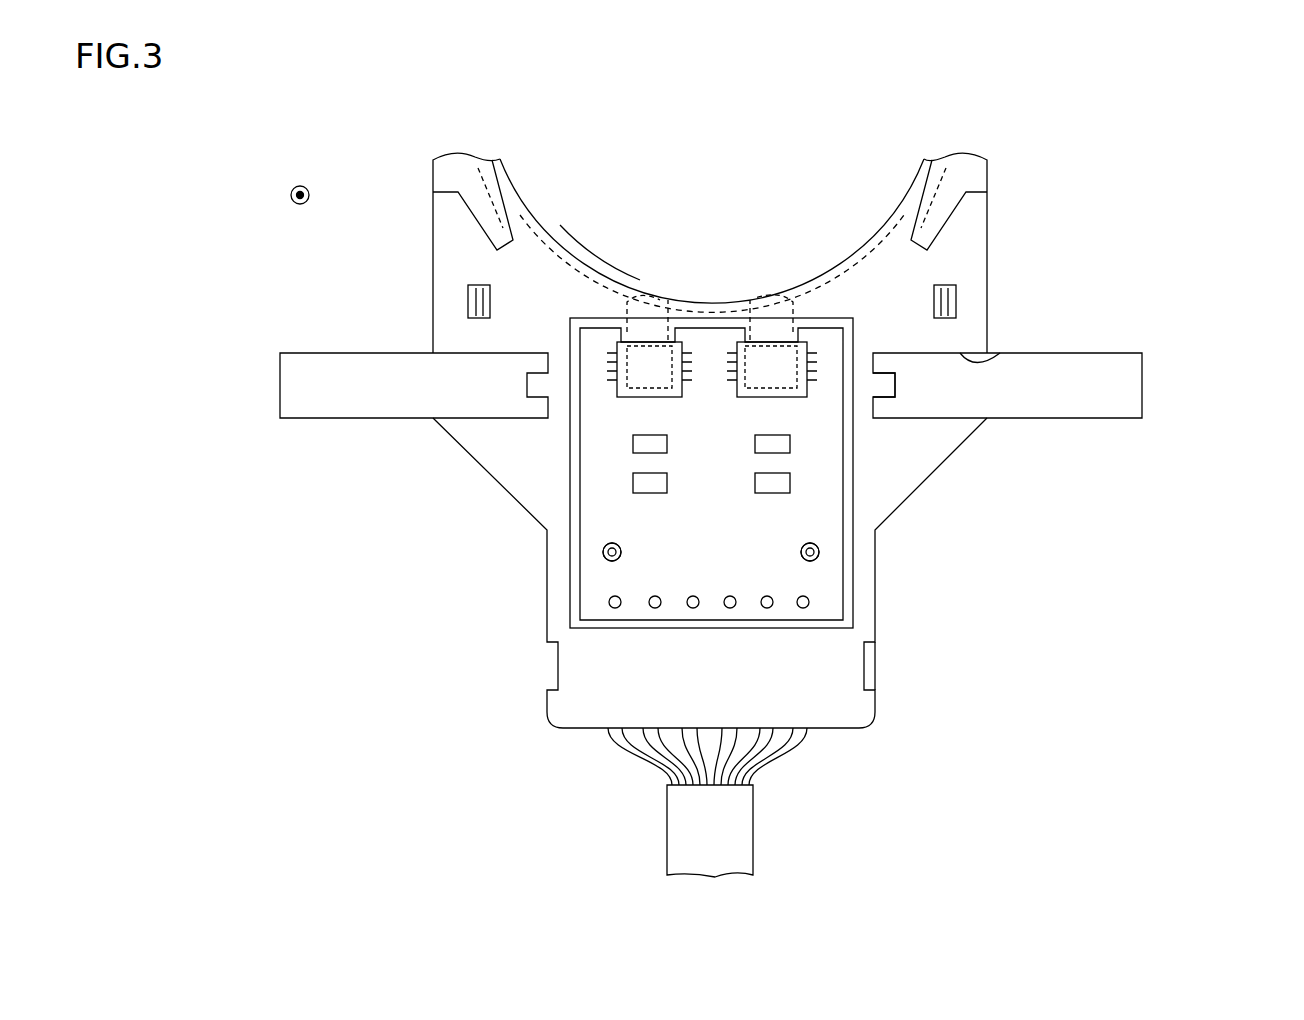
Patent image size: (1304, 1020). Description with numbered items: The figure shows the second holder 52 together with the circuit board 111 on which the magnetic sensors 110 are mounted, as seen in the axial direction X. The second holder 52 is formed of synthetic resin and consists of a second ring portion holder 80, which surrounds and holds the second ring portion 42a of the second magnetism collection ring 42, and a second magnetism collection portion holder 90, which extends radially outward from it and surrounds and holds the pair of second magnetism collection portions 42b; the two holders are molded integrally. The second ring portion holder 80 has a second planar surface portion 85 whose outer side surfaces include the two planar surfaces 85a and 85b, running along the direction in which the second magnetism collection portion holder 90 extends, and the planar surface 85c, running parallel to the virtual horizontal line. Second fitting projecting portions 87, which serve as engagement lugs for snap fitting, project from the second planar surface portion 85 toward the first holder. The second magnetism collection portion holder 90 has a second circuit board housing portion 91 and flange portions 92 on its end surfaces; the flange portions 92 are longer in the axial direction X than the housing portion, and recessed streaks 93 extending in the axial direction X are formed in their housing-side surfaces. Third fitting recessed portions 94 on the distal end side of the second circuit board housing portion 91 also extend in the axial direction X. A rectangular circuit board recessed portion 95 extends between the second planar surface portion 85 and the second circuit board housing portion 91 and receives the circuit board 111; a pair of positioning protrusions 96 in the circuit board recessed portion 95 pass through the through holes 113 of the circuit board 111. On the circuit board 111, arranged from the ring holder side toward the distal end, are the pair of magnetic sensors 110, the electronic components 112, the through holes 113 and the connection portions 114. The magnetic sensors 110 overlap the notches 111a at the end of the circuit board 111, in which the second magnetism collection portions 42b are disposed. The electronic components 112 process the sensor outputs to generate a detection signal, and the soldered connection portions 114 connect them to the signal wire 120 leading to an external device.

The axial direction X is at (310, 197).
The second magnetism collection ring 42 is at (743, 249).
The second ring portion 42a is at (522, 214).
The second magnetism collection portions 42b is at (755, 298).
The second holder 52 is at (788, 514).
The second ring portion holder 80 is at (795, 252).
The second planar surface portion 85 is at (712, 252).
The planar surface 85a is at (987, 212).
The planar surface 85b is at (433, 247).
The planar surface 85c is at (1000, 353).
The second fitting projecting portions 87 is at (468, 300).
The second magnetism collection portion holder 90 is at (758, 561).
The second circuit board housing portion 91 is at (711, 553).
The flange portions 92 is at (325, 400).
The recessed streaks 93 is at (895, 385).
The third fitting recessed portions 94 is at (866, 655).
The circuit board recessed portion 95 is at (708, 465).
The positioning protrusions 96 is at (622, 550).
The magnetic sensors 110 is at (712, 352).
The circuit board 111 is at (850, 582).
The notches 111a is at (628, 336).
The electronic components 112 is at (790, 440).
The through holes 113 is at (600, 553).
The connection portions 114 is at (655, 608).
The signal wire 120 is at (667, 818).